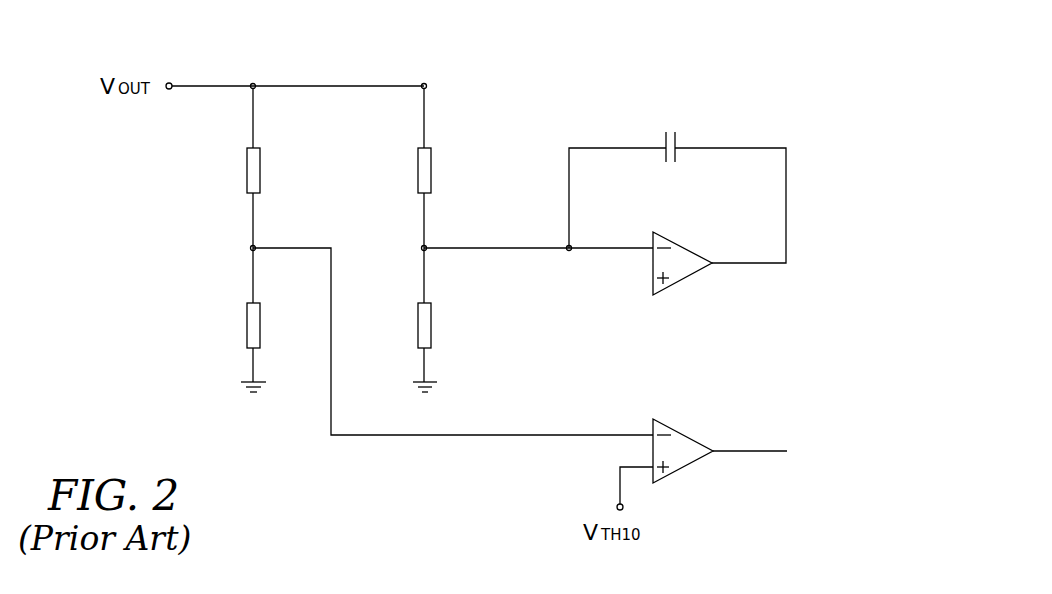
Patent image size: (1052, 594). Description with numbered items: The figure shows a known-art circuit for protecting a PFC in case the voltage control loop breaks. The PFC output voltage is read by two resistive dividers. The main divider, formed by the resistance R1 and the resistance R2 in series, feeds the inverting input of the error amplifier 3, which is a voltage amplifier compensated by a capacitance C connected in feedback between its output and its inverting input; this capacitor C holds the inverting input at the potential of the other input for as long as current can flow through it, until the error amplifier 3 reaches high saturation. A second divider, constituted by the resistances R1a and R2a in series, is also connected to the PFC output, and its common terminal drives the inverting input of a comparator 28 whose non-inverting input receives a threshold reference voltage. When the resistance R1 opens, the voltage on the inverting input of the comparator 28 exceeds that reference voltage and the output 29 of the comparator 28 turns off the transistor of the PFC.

The error amplifier 3 is at (683, 260).
The comparator 28 is at (685, 446).
The output of the comparator 29 is at (757, 450).
The capacitance C is at (660, 142).
The resistance R1 is at (443, 168).
The resistance R2 is at (441, 320).
The resistance R1a is at (221, 168).
The resistance R2a is at (224, 320).